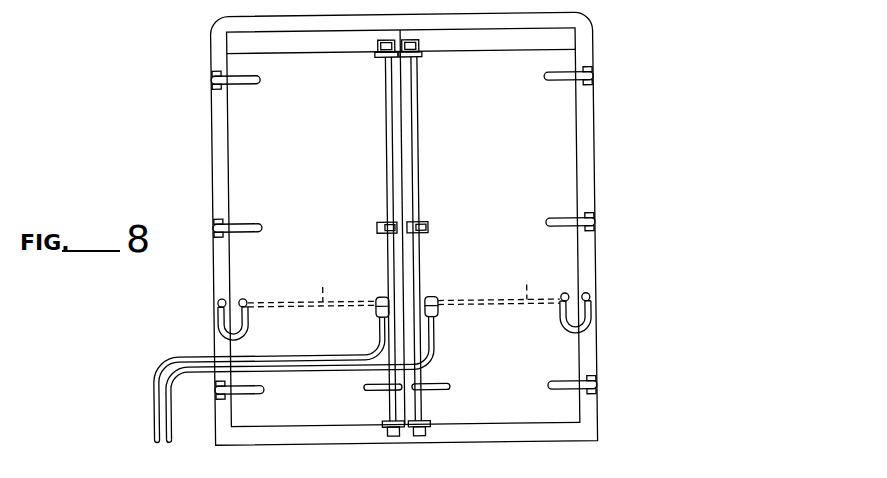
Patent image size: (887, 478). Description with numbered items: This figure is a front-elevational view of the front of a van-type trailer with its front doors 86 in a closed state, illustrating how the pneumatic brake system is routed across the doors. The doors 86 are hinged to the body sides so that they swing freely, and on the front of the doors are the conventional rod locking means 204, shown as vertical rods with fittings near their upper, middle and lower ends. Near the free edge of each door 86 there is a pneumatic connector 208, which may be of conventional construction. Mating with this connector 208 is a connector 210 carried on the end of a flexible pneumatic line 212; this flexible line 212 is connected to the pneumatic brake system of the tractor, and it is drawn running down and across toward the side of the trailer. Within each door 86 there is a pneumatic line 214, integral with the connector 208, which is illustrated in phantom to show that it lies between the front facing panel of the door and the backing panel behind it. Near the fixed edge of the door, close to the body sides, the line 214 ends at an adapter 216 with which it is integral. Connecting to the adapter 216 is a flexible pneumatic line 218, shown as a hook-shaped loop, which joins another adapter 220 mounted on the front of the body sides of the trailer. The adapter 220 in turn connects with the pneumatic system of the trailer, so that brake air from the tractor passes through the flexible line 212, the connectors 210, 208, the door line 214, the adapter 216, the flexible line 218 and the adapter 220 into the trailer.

The front doors 86 is at (231, 98).
The rod locking means 204 is at (389, 104).
The pneumatic connector 208 is at (382, 296).
The connector 210 is at (376, 312).
The flexible pneumatic line 212 is at (312, 354).
The pneumatic line 214 is at (322, 286).
The adapter 216 is at (244, 297).
The flexible pneumatic line 218 is at (216, 326).
The adapter 220 is at (217, 300).